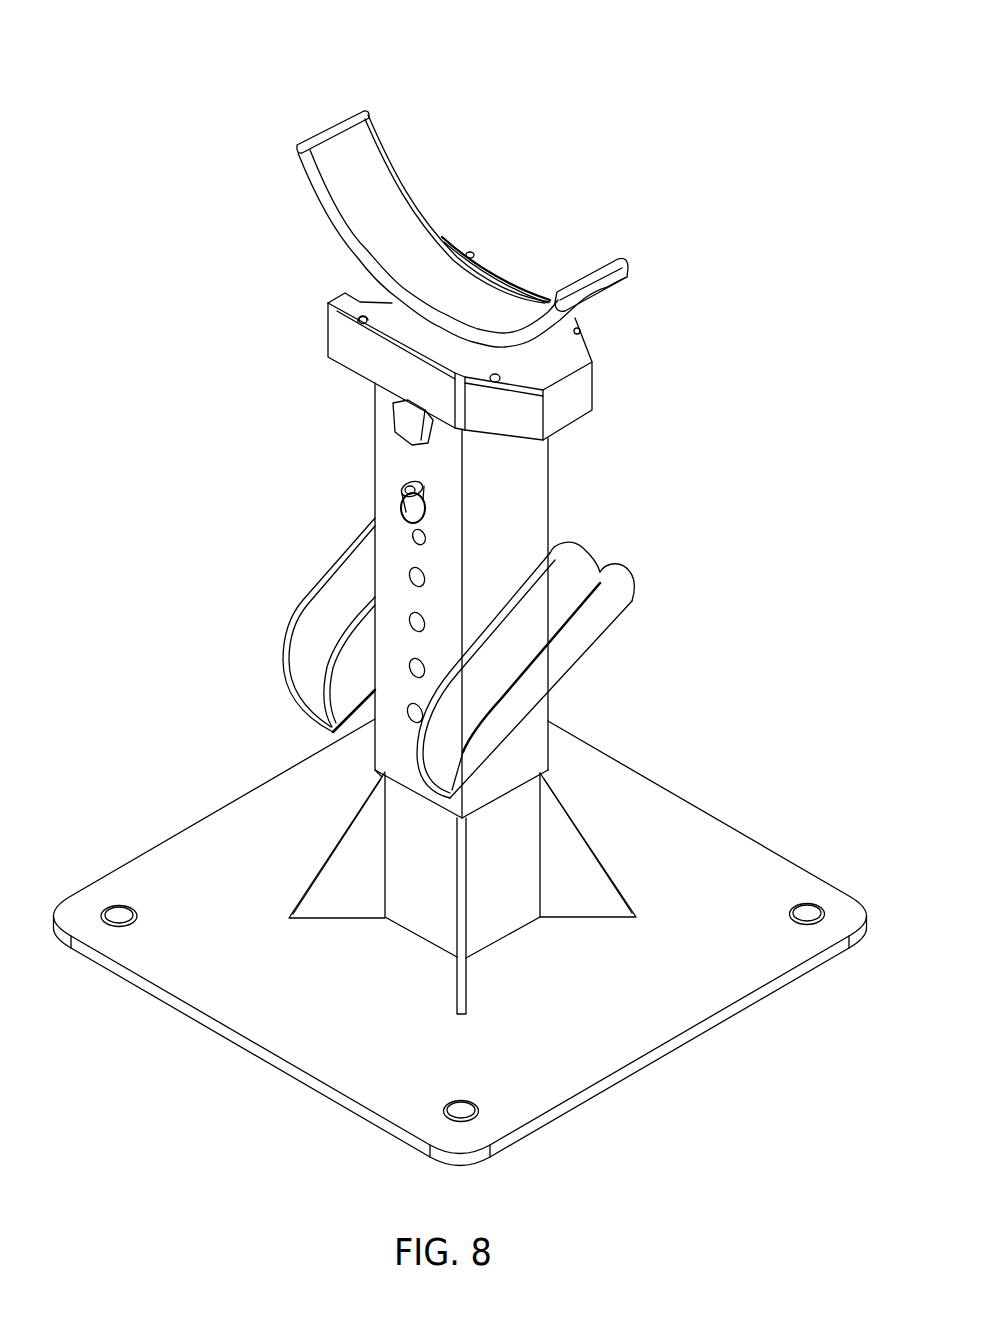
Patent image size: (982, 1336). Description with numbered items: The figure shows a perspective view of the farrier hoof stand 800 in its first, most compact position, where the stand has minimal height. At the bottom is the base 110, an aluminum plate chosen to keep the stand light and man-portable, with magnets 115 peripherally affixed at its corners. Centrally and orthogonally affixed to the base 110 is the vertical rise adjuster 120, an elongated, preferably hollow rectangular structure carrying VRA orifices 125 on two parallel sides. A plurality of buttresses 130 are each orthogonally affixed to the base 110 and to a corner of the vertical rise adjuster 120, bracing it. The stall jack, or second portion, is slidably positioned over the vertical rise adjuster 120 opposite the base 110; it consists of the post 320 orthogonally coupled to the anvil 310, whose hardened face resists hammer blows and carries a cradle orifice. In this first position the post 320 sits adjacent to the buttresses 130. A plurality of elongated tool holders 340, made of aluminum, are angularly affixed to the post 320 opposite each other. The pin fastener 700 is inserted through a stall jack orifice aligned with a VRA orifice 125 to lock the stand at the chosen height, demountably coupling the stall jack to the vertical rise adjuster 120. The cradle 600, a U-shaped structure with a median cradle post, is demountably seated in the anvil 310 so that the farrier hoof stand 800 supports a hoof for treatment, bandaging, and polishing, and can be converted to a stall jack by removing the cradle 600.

The farrier hoof stand 800 is at (733, 120).
The cradle 600 is at (622, 260).
The anvil 310 is at (593, 388).
The post 320 is at (550, 497).
The pin fastener 700 is at (393, 490).
The VRA orifices 125 is at (428, 577).
The elongated tool holders 340 is at (312, 590).
The vertical rise adjuster 120 is at (412, 935).
The buttresses 130 is at (608, 870).
The base 110 is at (155, 844).
The magnets 115 is at (780, 920).